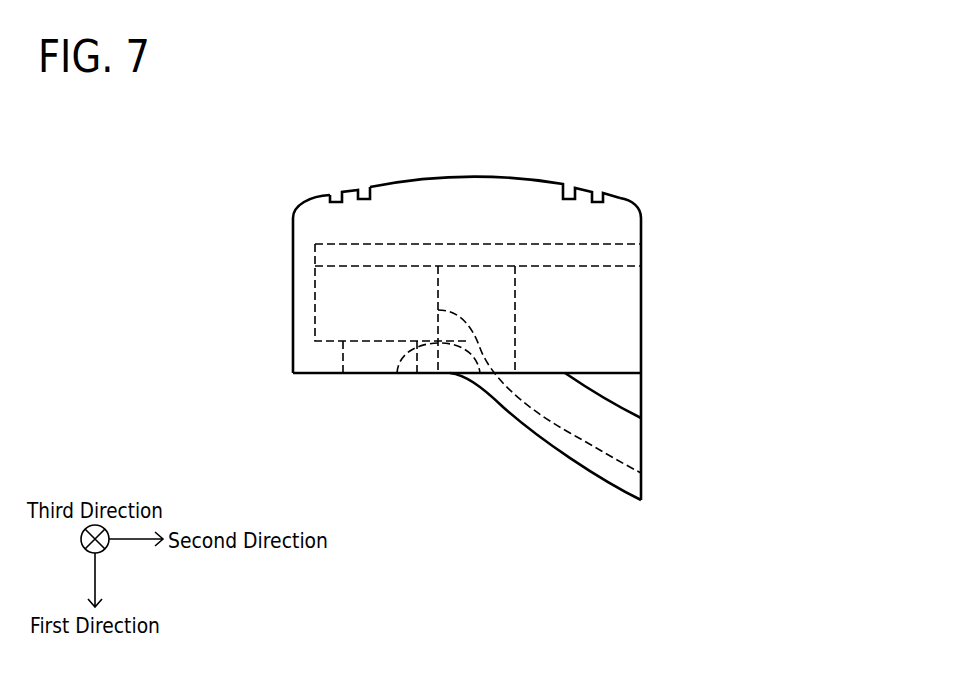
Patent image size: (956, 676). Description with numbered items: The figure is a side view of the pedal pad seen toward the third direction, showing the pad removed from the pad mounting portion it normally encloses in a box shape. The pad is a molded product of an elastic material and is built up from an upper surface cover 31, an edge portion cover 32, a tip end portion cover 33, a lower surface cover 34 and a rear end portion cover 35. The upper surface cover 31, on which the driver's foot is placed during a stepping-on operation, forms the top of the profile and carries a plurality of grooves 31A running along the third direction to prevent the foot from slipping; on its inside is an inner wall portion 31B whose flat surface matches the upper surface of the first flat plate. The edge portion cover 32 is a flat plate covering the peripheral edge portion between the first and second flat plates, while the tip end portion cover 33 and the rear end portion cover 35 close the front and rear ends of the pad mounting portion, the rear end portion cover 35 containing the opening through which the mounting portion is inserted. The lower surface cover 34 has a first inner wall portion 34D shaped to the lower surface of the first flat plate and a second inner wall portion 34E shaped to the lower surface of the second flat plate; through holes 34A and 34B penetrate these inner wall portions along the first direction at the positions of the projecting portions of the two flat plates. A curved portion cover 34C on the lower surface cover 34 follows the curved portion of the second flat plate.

The upper surface cover 31 is at (461, 190).
The grooves 31A is at (333, 193).
The inner wall portion 31B is at (372, 247).
The edge portion cover 32 is at (512, 232).
The tip end portion cover 33 is at (293, 232).
The lower surface cover 34 is at (343, 373).
The through hole 34A is at (480, 373).
The through hole 34B is at (397, 373).
The curved portion cover 34C is at (557, 443).
The first inner wall portion 34D is at (498, 268).
The second inner wall portion 34E is at (333, 338).
The rear end portion cover 35 is at (641, 227).